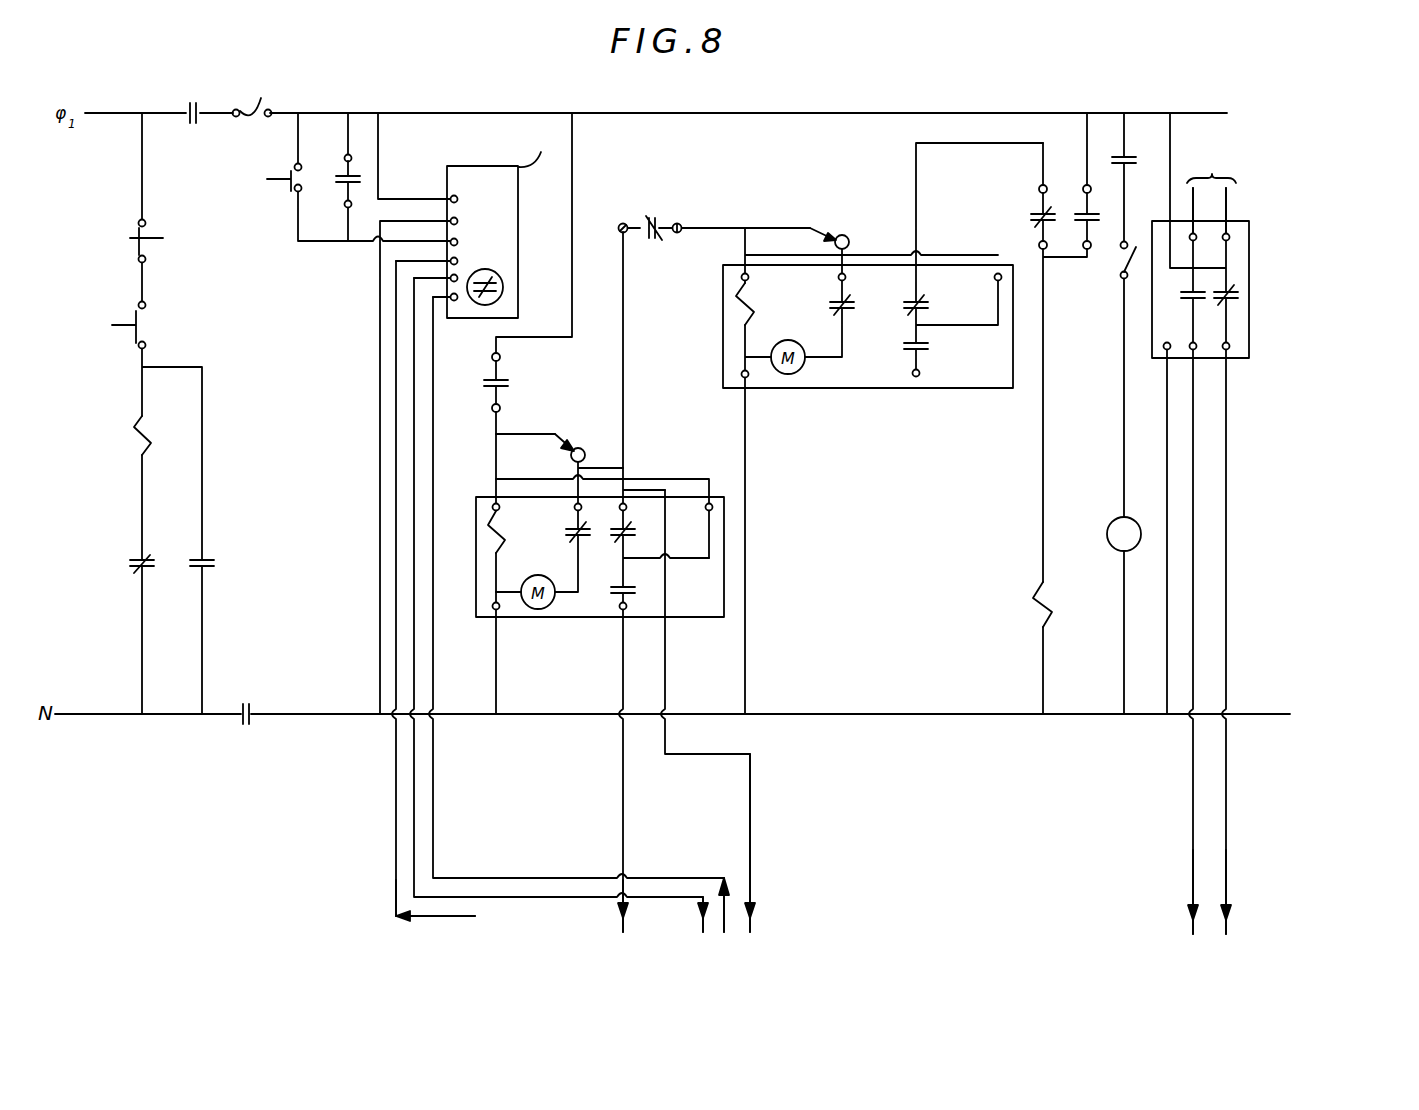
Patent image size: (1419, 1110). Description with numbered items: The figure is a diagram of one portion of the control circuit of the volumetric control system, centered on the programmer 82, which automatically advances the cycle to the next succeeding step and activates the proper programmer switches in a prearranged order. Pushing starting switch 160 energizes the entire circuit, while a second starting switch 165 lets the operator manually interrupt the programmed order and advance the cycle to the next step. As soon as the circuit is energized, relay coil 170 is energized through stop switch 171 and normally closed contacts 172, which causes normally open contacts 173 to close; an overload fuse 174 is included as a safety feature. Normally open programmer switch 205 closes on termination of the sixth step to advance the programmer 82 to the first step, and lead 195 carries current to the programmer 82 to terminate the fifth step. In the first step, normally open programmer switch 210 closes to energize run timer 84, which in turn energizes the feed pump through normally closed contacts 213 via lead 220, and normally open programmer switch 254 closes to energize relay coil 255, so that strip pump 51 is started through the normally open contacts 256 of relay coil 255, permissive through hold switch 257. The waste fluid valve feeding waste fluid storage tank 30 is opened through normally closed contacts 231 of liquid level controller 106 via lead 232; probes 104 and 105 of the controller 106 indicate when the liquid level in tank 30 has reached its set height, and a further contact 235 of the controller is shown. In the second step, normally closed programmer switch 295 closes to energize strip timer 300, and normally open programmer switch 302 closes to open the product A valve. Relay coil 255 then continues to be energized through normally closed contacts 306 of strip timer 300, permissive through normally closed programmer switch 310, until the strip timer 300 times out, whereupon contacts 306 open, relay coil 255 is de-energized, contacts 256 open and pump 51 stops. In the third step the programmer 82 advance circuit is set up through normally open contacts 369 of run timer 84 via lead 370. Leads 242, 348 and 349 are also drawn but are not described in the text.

The normally open contacts 173 is at (203, 88).
The overload fuse 174 is at (261, 100).
The starting switch 165 is at (290, 170).
The normally open programmer switch 205 is at (340, 176).
The programmer 82 is at (515, 191).
The stop switch 171 is at (136, 239).
The starting switch 160 is at (114, 324).
The relay coil 170 is at (136, 452).
The normally closed contacts 172 is at (130, 564).
The normally closed programmer switch 295 is at (644, 222).
The normally open programmer switch 210 is at (490, 381).
The normally open programmer switch 302 is at (552, 433).
The normally closed contacts 213 is at (656, 534).
The normally open contacts 369 is at (610, 592).
The run timer 84 is at (505, 622).
The normally closed contacts 306 is at (946, 310).
The strip timer 300 is at (813, 393).
The normally closed programmer switch 310 is at (1034, 211).
The normally open programmer switch 254 is at (1075, 212).
The normally open contacts 256 is at (1129, 154).
The hold switch 257 is at (1123, 272).
The waste fluid storage tank 30 is at (1251, 167).
The probe 104 is at (1193, 211).
The probe 105 is at (1232, 204).
The normally closed contacts 231 is at (1234, 290).
The contacts 235 is at (1188, 294).
The liquid level controller 106 is at (1296, 311).
The strip pump 51 is at (1112, 519).
The relay coil 255 is at (1034, 600).
The conductor 242 is at (1190, 904).
The lead 232 is at (1229, 902).
The lead 195 is at (477, 933).
The lead 370 is at (620, 926).
The conductor 348 is at (699, 921).
The conductor 349 is at (728, 895).
The lead 220 is at (757, 915).